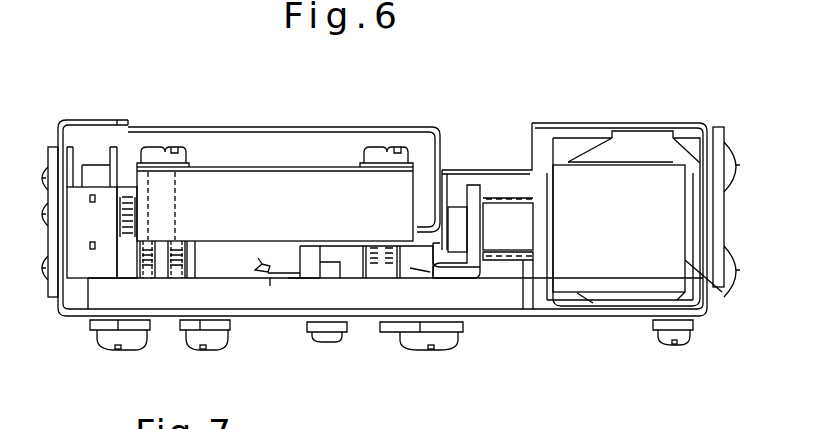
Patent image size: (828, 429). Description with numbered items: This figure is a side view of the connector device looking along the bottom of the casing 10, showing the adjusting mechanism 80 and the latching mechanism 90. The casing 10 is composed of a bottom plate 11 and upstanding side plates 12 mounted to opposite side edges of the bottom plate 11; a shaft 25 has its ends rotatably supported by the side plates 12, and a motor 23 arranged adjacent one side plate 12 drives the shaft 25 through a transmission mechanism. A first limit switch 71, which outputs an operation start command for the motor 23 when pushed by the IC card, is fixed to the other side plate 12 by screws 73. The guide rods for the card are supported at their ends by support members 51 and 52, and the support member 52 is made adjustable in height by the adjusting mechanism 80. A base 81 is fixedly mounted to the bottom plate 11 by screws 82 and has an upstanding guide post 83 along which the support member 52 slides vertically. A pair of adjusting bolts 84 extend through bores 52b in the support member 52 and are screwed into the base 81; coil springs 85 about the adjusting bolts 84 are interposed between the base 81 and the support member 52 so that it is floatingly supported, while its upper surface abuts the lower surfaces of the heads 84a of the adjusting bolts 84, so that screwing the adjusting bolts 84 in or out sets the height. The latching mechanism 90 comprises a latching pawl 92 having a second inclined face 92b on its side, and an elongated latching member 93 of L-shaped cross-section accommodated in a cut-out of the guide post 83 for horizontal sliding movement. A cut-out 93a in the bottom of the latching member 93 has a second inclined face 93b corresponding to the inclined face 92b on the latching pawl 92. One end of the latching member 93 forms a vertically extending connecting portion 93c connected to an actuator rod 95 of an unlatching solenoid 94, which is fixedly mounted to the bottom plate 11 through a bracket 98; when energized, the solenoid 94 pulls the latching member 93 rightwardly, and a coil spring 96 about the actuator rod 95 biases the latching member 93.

The casing 10 is at (567, 322).
The bottom plate 11 is at (526, 320).
The side plate 12 is at (62, 132).
The motor 23 is at (635, 153).
The shaft 25 is at (455, 178).
The support member 51 is at (313, 146).
The support member 52 is at (243, 178).
The bore 52b is at (170, 212).
The first limit switch 71 is at (80, 200).
The screw 73 is at (125, 188).
The adjusting mechanism 80 is at (420, 268).
The base 81 is at (440, 329).
The screw 82 is at (100, 347).
The guide post 83 is at (163, 242).
The adjusting bolt 84 is at (164, 268).
The head 84a is at (150, 152).
The coil spring 85 is at (142, 283).
The latching mechanism 90 is at (410, 278).
The latching pawl 92 is at (316, 283).
The second inclined face 92b is at (258, 272).
The latching member 93 is at (198, 266).
The cut-out 93a is at (317, 266).
The second inclined face 93b is at (268, 286).
The connecting portion 93c is at (476, 195).
The unlatching solenoid 94 is at (628, 273).
The actuator rod 95 is at (503, 220).
The coil spring 96 is at (470, 268).
The bracket 98 is at (718, 292).